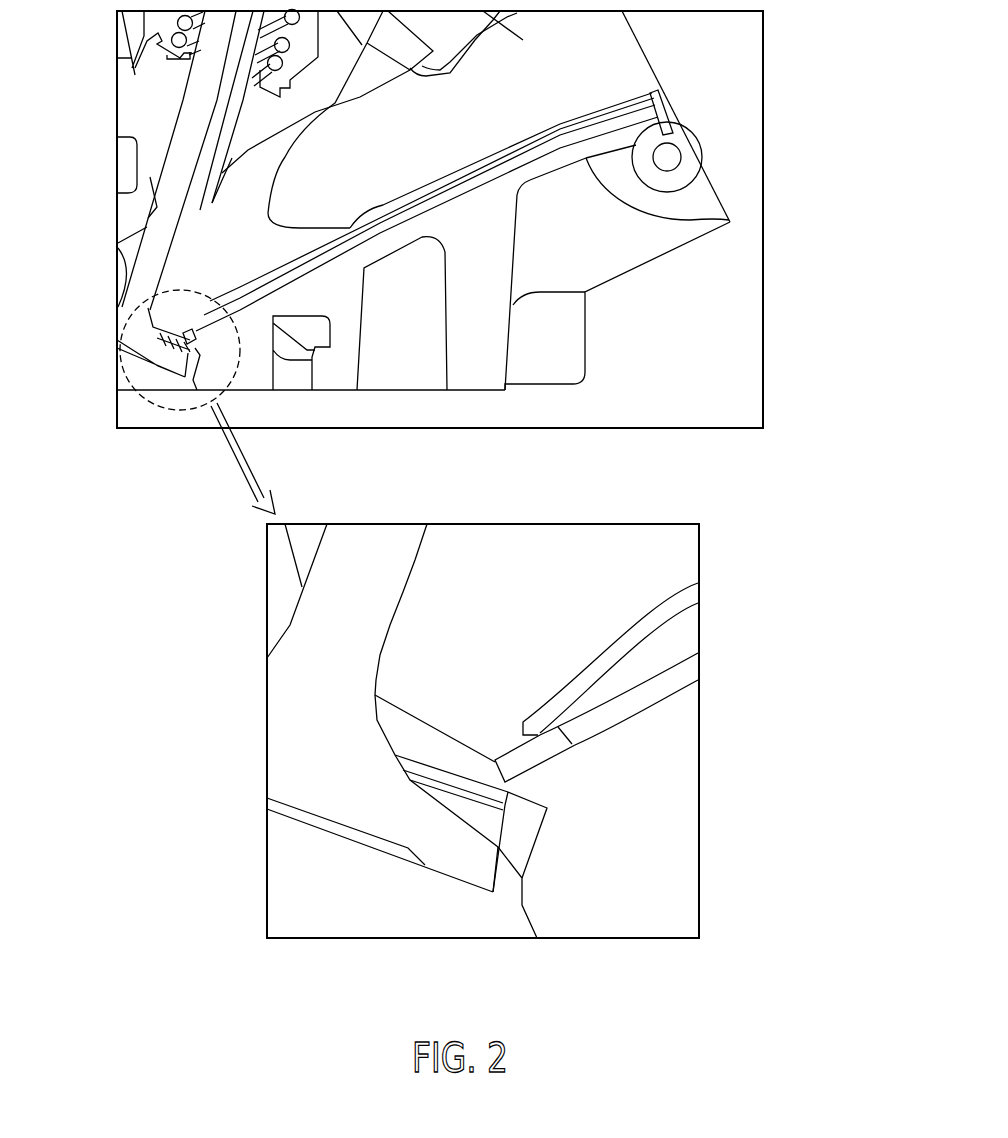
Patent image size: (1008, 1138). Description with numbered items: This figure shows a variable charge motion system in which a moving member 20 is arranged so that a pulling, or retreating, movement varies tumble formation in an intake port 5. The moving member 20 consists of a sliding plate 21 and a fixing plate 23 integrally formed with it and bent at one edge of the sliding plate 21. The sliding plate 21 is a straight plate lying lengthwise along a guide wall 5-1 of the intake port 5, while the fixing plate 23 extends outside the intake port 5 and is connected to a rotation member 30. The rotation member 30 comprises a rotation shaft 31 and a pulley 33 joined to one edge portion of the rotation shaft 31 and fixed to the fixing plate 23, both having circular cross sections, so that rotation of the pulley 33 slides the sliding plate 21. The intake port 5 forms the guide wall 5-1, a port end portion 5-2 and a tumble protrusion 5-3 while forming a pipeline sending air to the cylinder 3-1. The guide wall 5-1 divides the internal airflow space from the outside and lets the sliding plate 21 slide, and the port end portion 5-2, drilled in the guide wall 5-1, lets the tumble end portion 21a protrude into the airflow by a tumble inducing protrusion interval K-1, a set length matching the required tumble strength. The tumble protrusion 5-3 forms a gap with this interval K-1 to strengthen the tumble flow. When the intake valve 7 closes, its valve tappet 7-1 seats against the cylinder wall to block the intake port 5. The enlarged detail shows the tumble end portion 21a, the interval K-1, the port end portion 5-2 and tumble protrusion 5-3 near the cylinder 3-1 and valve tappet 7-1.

The intake valve 7 is at (200, 118).
The valve tappet 7-1 is at (463, 853).
The intake port 5 is at (496, 630).
The guide wall 5-1 is at (190, 253).
The port end portion 5-2 is at (158, 337).
The tumble protrusion 5-3 is at (140, 361).
The cylinder 3-1 is at (347, 908).
The moving member 20 is at (817, 85).
The sliding plate 21 is at (650, 86).
The tumble end portion 21a is at (575, 732).
The fixing plate 23 is at (673, 113).
The rotation member 30 is at (830, 173).
The rotation shaft 31 is at (668, 158).
The pulley 33 is at (696, 152).
The tumble inducing protrusion interval K-1 is at (520, 730).